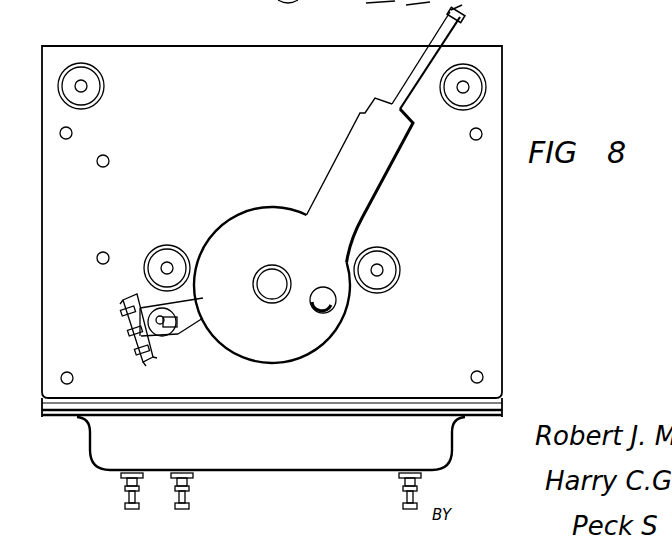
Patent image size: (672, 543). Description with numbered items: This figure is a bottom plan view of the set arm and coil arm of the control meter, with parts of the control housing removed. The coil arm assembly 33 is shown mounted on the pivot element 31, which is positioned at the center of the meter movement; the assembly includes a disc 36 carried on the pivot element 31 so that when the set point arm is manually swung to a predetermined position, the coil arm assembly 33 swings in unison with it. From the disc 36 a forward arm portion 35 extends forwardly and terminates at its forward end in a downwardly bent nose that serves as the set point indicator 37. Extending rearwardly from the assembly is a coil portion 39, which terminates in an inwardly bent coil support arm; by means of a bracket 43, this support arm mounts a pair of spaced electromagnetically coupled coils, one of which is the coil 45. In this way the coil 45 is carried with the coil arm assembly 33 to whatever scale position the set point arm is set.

The pivot element 31 is at (281, 277).
The coil arm assembly 33 is at (391, 170).
The forward arm portion 35 is at (400, 91).
The disc 36 is at (320, 334).
The set point indicator 37 is at (465, 14).
The coil portion 39 is at (200, 317).
The bracket 43 is at (143, 318).
The coil 45 is at (164, 336).